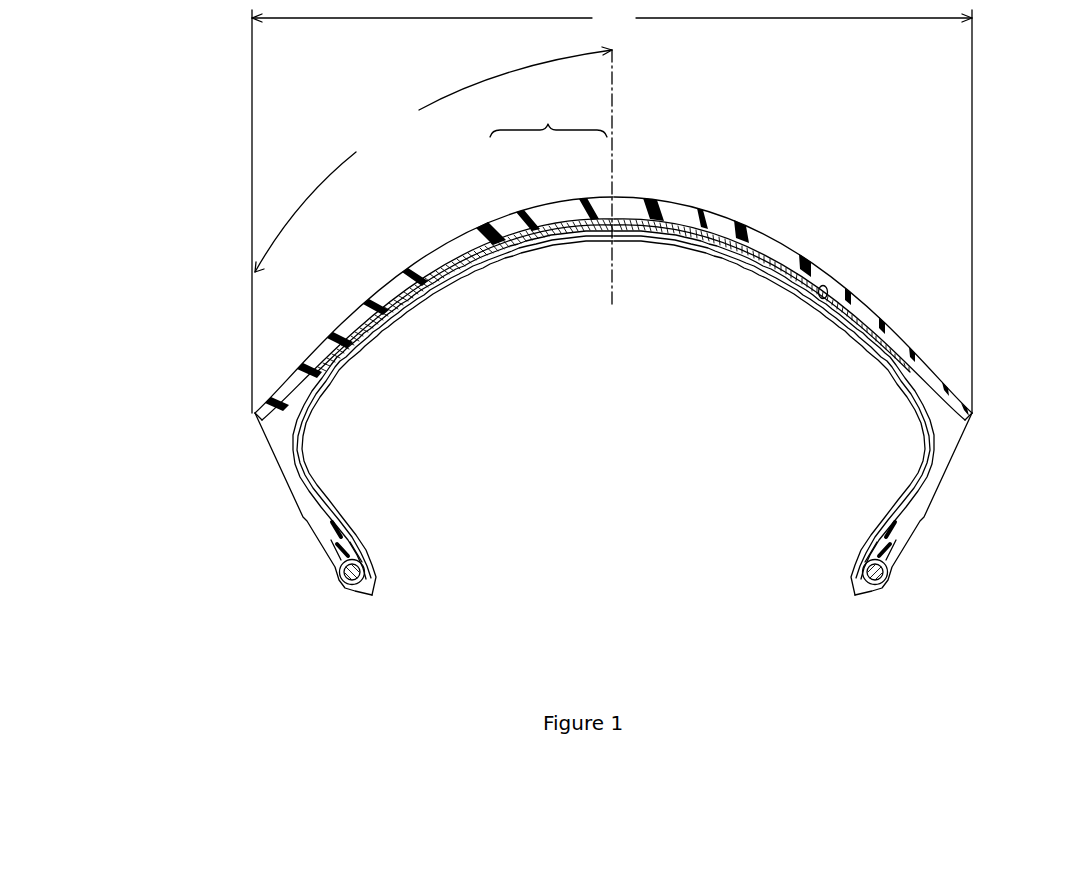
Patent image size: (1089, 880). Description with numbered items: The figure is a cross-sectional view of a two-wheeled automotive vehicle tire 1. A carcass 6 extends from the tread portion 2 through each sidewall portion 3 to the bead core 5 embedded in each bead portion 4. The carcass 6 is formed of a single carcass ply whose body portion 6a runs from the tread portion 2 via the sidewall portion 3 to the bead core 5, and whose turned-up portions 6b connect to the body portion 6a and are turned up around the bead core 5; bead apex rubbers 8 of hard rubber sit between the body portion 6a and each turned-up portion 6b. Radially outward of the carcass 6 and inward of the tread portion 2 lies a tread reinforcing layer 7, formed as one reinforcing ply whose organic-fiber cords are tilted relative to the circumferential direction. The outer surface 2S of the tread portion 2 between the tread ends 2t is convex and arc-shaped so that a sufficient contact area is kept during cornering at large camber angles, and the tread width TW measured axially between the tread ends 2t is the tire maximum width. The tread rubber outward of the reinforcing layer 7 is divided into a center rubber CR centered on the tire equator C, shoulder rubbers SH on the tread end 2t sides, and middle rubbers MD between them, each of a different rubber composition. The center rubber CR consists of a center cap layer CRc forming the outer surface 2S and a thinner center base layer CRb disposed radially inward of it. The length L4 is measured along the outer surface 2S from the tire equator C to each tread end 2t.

The two-wheeled automotive vehicle tire 1 is at (793, 173).
The tread portion 2 is at (615, 266).
The outer surface of the tread portion 2S is at (712, 210).
The tread end 2t is at (255, 413).
The sidewall portion 3 is at (283, 488).
The bead portion 4 is at (325, 553).
The bead core 5 is at (361, 569).
The carcass 6 is at (613, 413).
The body portion 6a is at (933, 440).
The turned-up portion 6b is at (927, 470).
The tread reinforcing layer 7 is at (823, 299).
The bead apex rubber 8 is at (341, 530).
The tire equator C is at (612, 190).
The tread width TW is at (612, 211).
The length from the tire equator to the tread end L4 is at (433, 159).
The center rubber CR is at (548, 168).
The center cap layer CRc is at (517, 230).
The center base layer CRb is at (580, 227).
The middle rubber MD is at (392, 293).
The shoulder rubber SH is at (305, 377).